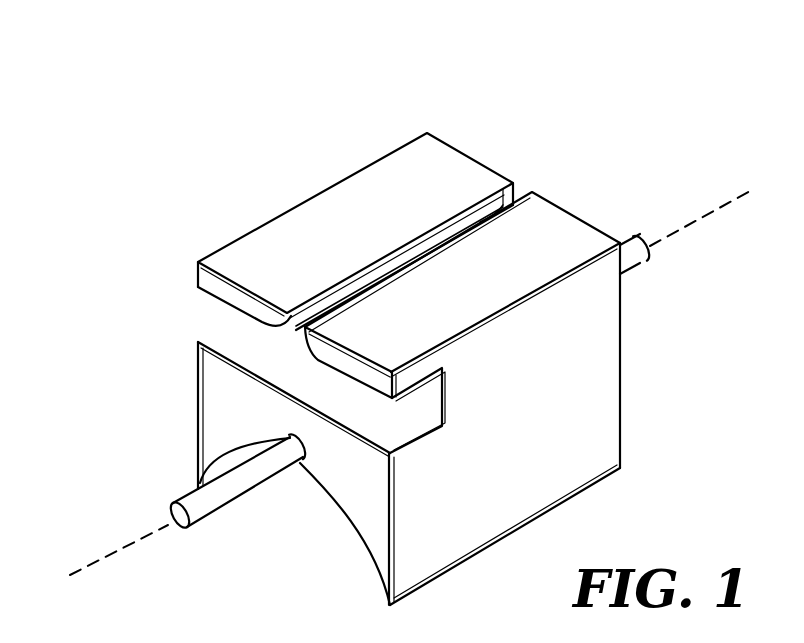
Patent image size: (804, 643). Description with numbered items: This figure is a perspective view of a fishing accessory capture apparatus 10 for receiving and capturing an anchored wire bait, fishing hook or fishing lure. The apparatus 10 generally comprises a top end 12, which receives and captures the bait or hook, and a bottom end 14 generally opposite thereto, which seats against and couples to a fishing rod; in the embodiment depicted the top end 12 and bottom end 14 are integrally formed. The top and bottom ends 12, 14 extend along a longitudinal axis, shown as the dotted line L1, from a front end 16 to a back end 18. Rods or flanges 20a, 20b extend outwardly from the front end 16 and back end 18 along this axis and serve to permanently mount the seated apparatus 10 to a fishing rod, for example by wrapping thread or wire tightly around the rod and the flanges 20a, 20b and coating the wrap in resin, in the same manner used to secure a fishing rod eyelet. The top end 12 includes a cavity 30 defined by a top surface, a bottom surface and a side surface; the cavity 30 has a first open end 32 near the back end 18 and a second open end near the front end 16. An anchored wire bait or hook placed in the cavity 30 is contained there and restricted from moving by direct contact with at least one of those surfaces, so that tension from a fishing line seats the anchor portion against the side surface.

The fishing accessory capture apparatus 10 is at (138, 148).
The top end 12 is at (342, 138).
The bottom end 14 is at (510, 550).
The front end 16 is at (642, 386).
The back end 18 is at (195, 389).
The rod or flange 20a is at (642, 252).
The rod or flange 20b is at (210, 503).
The cavity 30 is at (379, 410).
The first open end 32 is at (203, 305).
The longitudinal axis L1 is at (388, 395).